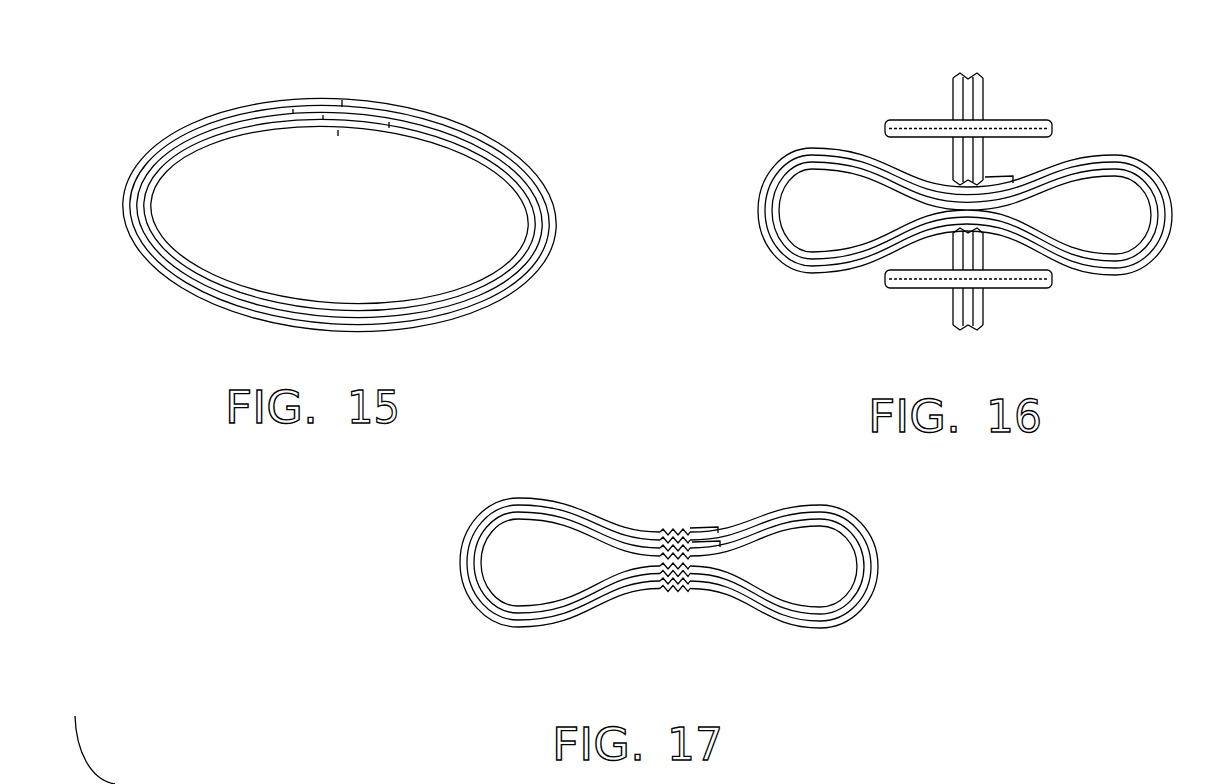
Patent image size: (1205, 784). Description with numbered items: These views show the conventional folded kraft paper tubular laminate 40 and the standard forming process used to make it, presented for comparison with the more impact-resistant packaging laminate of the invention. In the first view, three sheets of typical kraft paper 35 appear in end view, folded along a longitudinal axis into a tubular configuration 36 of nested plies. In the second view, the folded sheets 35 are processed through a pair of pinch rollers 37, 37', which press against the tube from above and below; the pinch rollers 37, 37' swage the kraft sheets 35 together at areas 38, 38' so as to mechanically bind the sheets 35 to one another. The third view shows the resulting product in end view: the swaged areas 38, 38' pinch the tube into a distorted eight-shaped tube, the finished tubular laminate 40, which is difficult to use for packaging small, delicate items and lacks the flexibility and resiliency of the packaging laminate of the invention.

In FIG. 15, the kraft paper sheets 35 is at (143, 222).
In FIG. 16, the kraft paper sheets 35 is at (778, 222).
In FIG. 15, the tubular configuration 36 is at (315, 172).
In FIG. 16, the pinch roller 37 is at (995, 116).
In FIG. 16, the pinch roller 37' is at (993, 299).
In FIG. 17, the swaged area 38 is at (685, 489).
In FIG. 17, the swaged area 38' is at (688, 626).
In FIG. 17, the folded kraft paper tubular laminate 40 is at (669, 541).